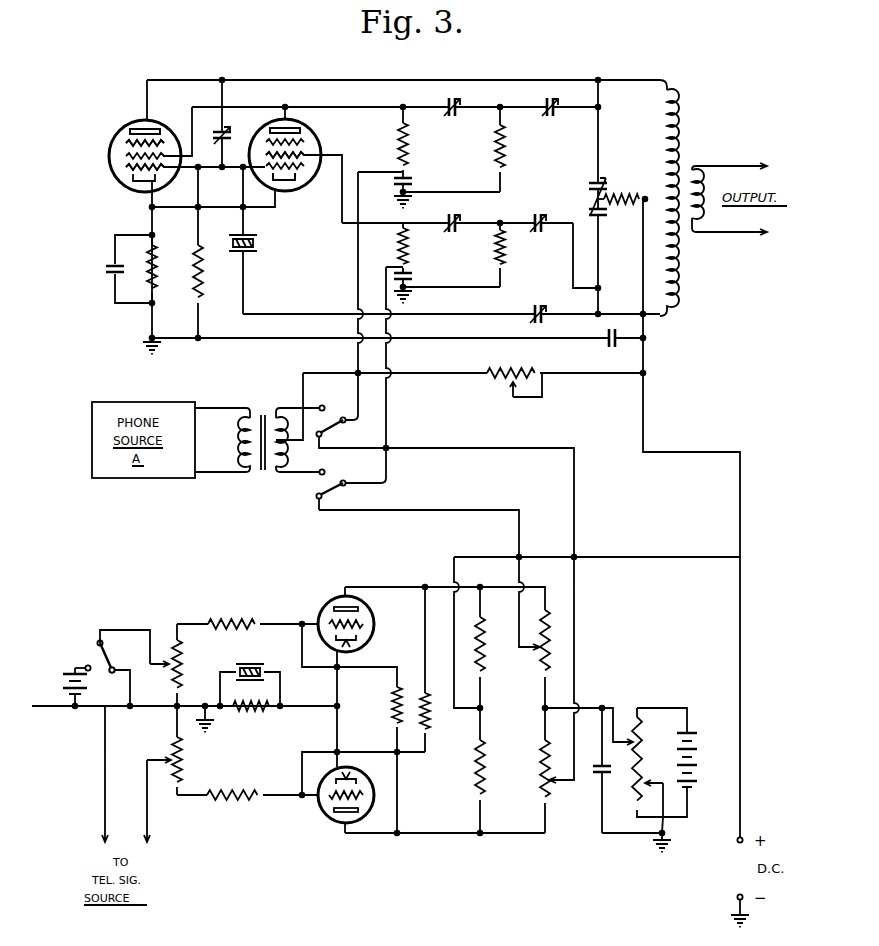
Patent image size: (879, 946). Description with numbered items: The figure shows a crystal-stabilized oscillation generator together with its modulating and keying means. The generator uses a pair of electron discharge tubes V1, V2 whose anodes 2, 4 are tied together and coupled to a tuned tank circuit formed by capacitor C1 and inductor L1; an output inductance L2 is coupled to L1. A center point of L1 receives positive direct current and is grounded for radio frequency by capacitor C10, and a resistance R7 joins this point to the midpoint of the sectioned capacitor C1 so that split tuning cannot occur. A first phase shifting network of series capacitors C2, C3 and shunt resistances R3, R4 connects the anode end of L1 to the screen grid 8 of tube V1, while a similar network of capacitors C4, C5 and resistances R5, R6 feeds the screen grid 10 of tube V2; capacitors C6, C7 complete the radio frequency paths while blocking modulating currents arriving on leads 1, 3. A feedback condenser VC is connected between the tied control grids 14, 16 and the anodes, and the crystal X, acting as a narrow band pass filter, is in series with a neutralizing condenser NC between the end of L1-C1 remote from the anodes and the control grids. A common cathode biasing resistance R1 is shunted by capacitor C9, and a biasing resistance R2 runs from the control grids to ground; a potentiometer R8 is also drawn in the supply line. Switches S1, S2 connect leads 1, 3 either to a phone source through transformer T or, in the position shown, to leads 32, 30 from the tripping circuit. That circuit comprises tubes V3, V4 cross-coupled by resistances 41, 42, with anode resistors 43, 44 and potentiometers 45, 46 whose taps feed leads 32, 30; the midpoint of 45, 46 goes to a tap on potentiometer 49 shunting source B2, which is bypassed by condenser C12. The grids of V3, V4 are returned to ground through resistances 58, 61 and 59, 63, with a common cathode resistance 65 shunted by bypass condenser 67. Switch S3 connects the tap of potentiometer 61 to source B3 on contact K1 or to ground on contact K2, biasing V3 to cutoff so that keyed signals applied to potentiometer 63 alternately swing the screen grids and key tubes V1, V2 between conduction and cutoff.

The electron discharge tube V1 is at (128, 121).
The anode 2 is at (145, 128).
The screen grid 8 is at (118, 145).
The control grid 14 is at (123, 169).
The feedback condenser VC is at (215, 123).
The electron discharge tube V2 is at (295, 197).
The anode 4 is at (303, 131).
The screen grid 10 is at (305, 153).
The control grid 16 is at (303, 178).
The common cathode biasing resistance R1 is at (155, 272).
The biasing resistance R2 is at (201, 294).
The coupling and radio frequency bypassing capacitor C9 is at (106, 271).
The crystal X is at (252, 240).
The lead 1 is at (355, 289).
The lead 3 is at (385, 289).
The shunting resistance R3 is at (402, 143).
The capacitor C6 is at (395, 184).
The shunting resistance R4 is at (496, 155).
The series capacitor C2 is at (452, 124).
The series capacitor C3 is at (550, 124).
The resistance R5 is at (398, 250).
The capacitor C7 is at (412, 285).
The resistance R6 is at (497, 258).
The capacitor C4 is at (457, 238).
The capacitor C5 is at (536, 238).
The neutralizing or regeneration condenser NC is at (532, 303).
The capacitor C1 is at (614, 197).
The resistance R7 is at (640, 206).
The inductor L1 is at (683, 111).
The inductance L2 is at (704, 171).
The capacitor C10 is at (607, 348).
The potentiometer R8 is at (526, 357).
The transformer T is at (261, 410).
The switch S1 is at (351, 430).
The switch S2 is at (342, 484).
The lead 32 is at (482, 448).
The lead 30 is at (478, 510).
The tripping circuit tube V3 is at (334, 599).
The tripping circuit tube V4 is at (330, 824).
The resistance 58 is at (253, 618).
The potentiometer resistance 61 is at (182, 667).
The potentiometer resistance 63 is at (182, 772).
The resistance 59 is at (247, 791).
The resistance 65 is at (268, 713).
The bypass condenser 67 is at (258, 662).
The switch S3 is at (98, 648).
The contact K2 is at (114, 668).
The contact K1 is at (92, 673).
The source B3 is at (62, 678).
The resistance 42 is at (393, 706).
The resistance 41 is at (433, 713).
The anode resistor 43 is at (482, 648).
The anode resistor 44 is at (472, 778).
The potentiometer resistance 45 is at (540, 663).
The potentiometer resistance 46 is at (537, 779).
The condenser C12 is at (588, 773).
The potentiometer resistance 49 is at (626, 726).
The source of potential B2 is at (686, 762).